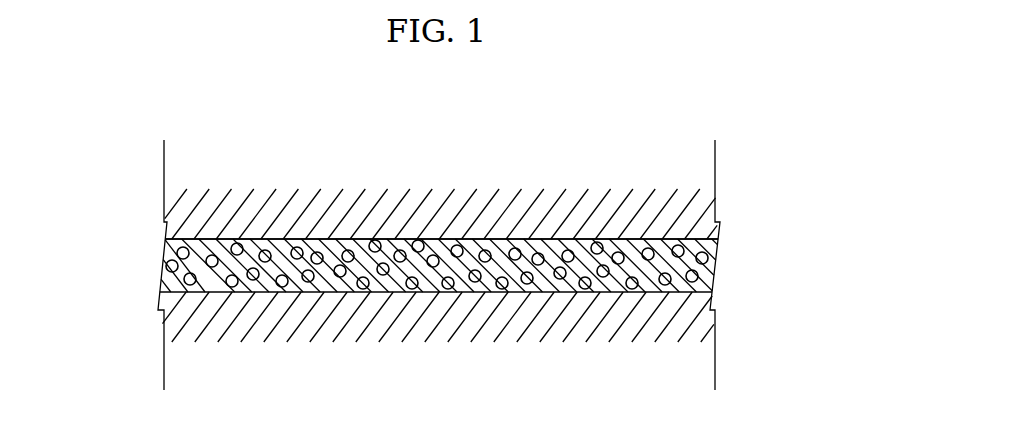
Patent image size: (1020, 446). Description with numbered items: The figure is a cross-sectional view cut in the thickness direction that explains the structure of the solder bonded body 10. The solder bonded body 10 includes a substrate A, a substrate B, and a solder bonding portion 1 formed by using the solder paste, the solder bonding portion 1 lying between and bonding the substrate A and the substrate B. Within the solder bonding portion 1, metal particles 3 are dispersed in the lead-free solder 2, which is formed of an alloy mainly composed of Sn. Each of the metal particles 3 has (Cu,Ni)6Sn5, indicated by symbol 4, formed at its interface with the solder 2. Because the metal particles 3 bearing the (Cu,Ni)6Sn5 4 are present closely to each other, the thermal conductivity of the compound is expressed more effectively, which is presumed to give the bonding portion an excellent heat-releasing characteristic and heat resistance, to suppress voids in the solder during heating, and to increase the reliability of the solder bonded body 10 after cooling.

The solder bonded body 10 is at (655, 135).
The solder bonding portion 1 is at (561, 236).
The lead-free solder 2 is at (495, 247).
The metal particles 3 is at (172, 244).
The (Cu,Ni)6Sn5 4 is at (170, 256).
The substrate A is at (380, 210).
The substrate B is at (390, 316).